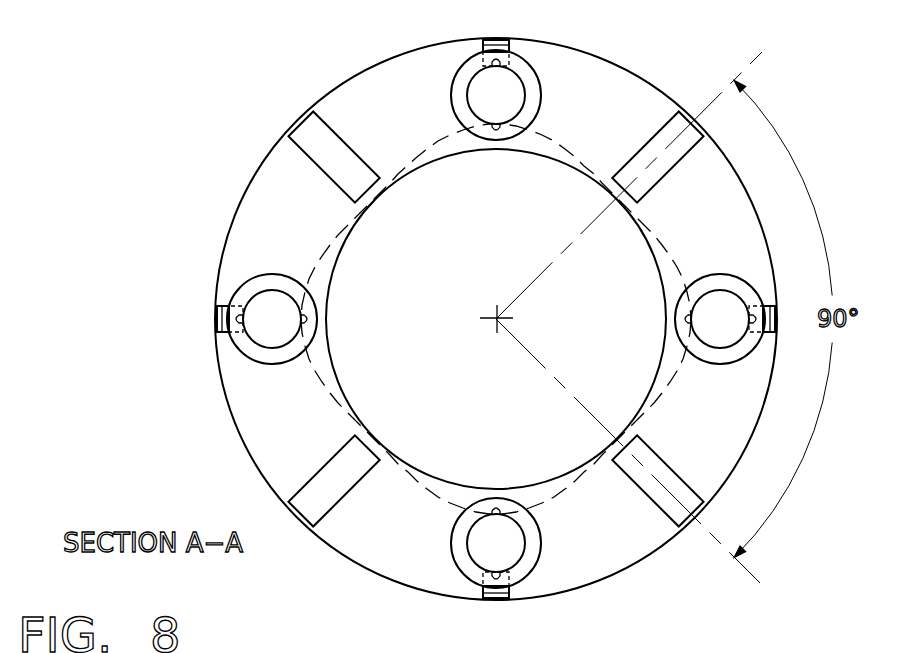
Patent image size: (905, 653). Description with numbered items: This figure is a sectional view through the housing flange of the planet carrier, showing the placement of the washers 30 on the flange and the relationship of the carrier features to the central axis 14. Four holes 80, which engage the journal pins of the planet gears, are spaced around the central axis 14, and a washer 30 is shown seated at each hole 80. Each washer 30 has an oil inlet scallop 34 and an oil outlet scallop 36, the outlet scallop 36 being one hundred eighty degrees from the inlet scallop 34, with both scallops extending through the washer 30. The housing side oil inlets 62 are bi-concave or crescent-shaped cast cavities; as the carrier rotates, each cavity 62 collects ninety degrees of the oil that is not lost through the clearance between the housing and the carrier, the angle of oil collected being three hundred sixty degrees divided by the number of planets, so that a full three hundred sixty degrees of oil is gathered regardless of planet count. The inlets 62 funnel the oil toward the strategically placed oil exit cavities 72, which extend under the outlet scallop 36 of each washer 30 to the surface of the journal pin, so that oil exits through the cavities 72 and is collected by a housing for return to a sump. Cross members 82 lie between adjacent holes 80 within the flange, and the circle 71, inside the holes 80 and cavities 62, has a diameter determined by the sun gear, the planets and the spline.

The central axis 14 is at (494, 316).
The washer 30 is at (542, 96).
The oil inlet scallop 34 is at (497, 128).
The oil outlet scallop 36 is at (503, 63).
The housing side oil inlet 62 is at (481, 155).
The circle 71 is at (417, 171).
The oil exit cavity 72 is at (492, 40).
The hole 80 is at (518, 114).
The cross member 82 is at (346, 146).